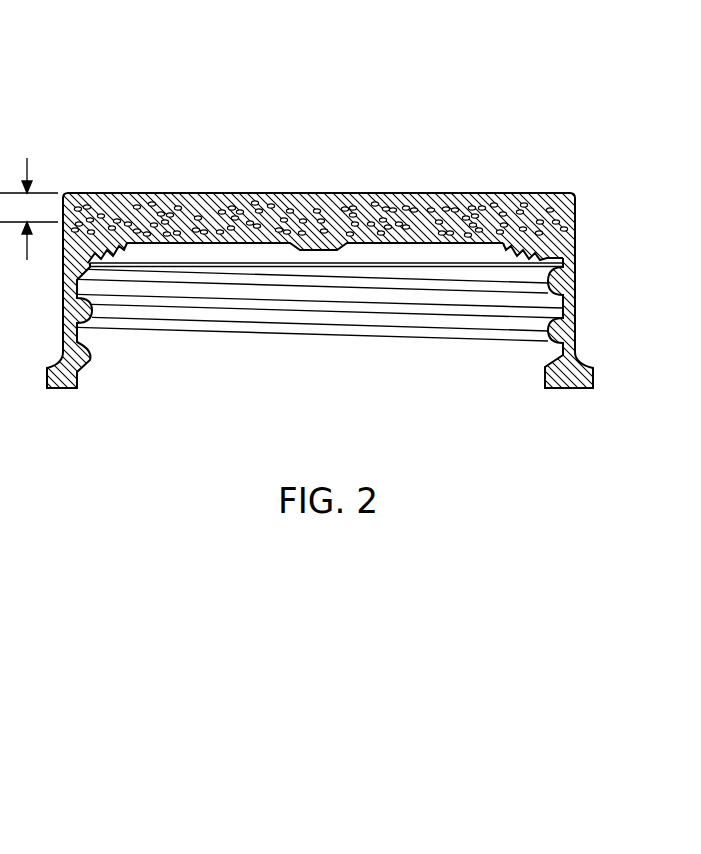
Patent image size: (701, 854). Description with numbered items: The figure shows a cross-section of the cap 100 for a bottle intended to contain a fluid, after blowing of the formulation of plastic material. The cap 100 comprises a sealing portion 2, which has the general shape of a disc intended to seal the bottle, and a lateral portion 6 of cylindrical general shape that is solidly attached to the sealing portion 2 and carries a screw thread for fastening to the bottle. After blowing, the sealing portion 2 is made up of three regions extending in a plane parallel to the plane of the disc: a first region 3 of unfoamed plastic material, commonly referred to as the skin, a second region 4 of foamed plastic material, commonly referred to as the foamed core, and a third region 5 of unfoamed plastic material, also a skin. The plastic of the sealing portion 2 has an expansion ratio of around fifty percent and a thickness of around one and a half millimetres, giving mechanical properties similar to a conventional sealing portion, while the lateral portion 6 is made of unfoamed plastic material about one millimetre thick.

The cap 100 is at (593, 142).
The sealing portion 2 is at (217, 192).
The first region 3 is at (352, 192).
The second region 4 is at (446, 218).
The third region 5 is at (502, 251).
The lateral portion 6 is at (577, 288).